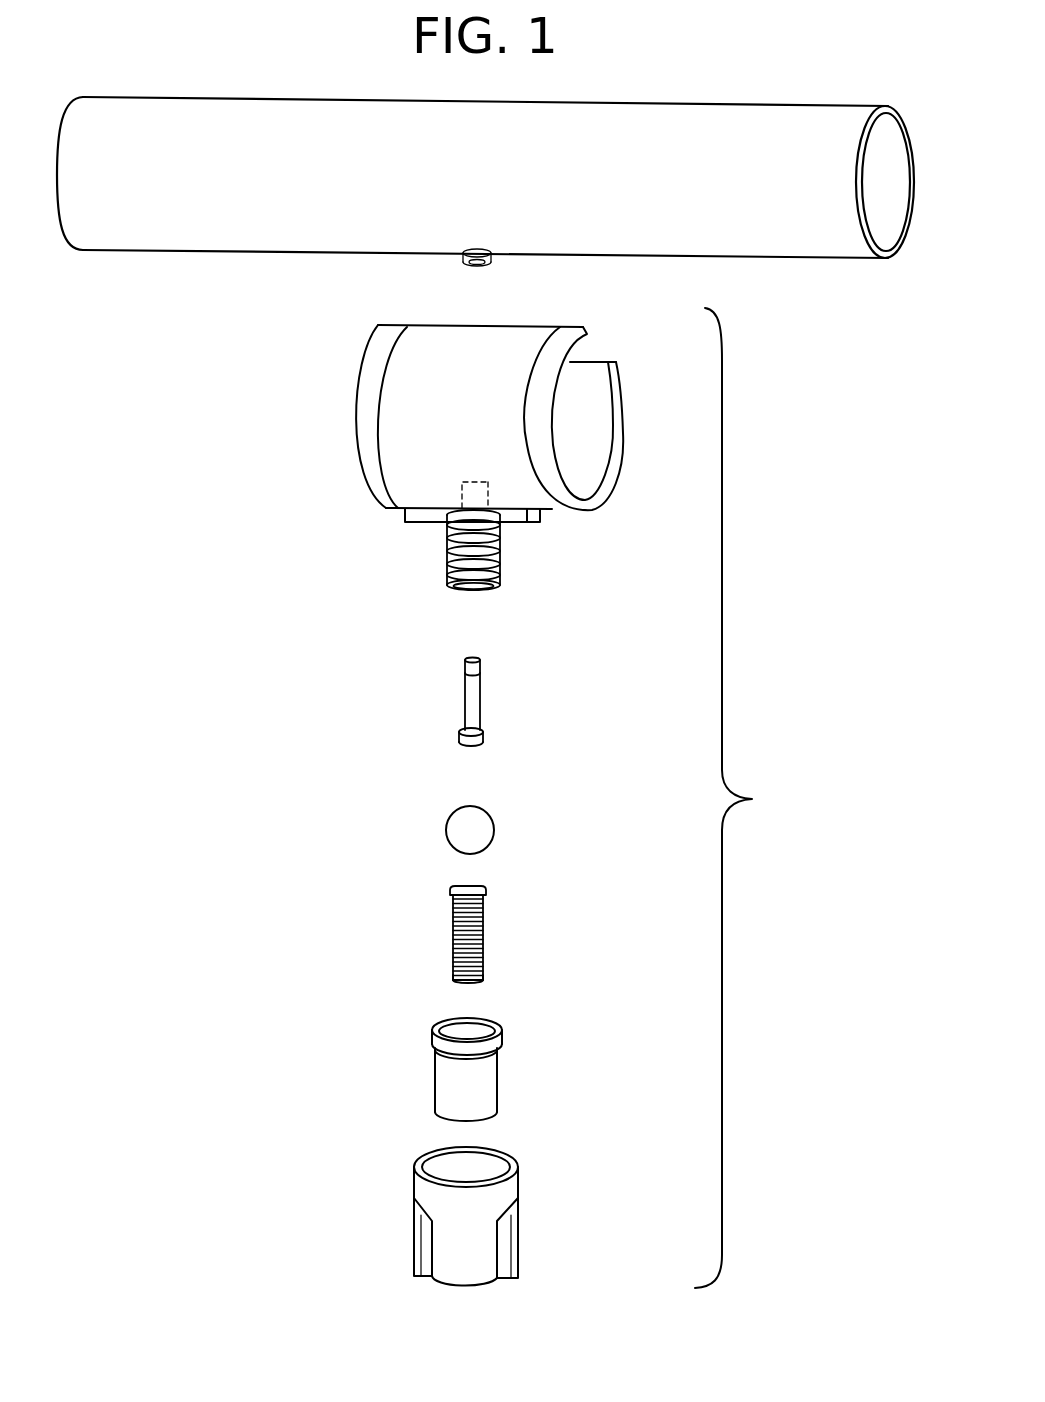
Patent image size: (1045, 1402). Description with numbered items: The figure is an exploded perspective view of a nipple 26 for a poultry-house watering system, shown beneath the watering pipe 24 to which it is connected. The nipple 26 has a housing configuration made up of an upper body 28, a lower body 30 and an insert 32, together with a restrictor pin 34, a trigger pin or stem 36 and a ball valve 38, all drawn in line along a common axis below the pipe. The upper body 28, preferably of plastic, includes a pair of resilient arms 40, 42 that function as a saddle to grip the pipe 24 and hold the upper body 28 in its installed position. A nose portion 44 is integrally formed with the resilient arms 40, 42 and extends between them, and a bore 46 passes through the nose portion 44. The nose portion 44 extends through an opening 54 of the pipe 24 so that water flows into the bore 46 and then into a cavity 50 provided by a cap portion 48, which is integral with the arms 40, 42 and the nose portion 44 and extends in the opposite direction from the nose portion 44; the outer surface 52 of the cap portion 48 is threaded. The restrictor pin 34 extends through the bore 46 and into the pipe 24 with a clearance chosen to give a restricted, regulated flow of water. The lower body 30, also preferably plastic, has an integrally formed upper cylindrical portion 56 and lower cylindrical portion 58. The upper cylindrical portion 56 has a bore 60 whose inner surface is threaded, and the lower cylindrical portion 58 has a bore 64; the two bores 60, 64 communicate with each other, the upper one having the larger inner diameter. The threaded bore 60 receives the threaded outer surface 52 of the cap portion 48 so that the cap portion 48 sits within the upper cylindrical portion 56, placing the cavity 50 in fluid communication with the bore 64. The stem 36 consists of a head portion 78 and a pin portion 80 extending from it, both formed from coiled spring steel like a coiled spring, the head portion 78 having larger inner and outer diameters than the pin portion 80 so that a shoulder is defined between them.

The watering pipe 24 is at (757, 243).
The nipple 26 is at (768, 798).
The upper body 28 is at (486, 429).
The lower body 30 is at (507, 1217).
The insert 32 is at (508, 1068).
The restrictor pin 34 is at (490, 701).
The stem 36 is at (468, 930).
The ball valve 38 is at (504, 817).
The resilient arm 40 is at (356, 402).
The resilient arm 42 is at (622, 386).
The nose portion 44 is at (488, 486).
The bore 46 is at (466, 480).
The cap portion 48 is at (488, 566).
The cavity 50 is at (462, 592).
The outer surface 52 is at (502, 550).
The opening 54 is at (480, 268).
The upper cylindrical portion 56 is at (515, 1190).
The lower cylindrical portion 58 is at (490, 1237).
The bore 60 is at (443, 1164).
The bore 64 is at (477, 1288).
The head portion 78 is at (450, 891).
The pin portion 80 is at (452, 957).